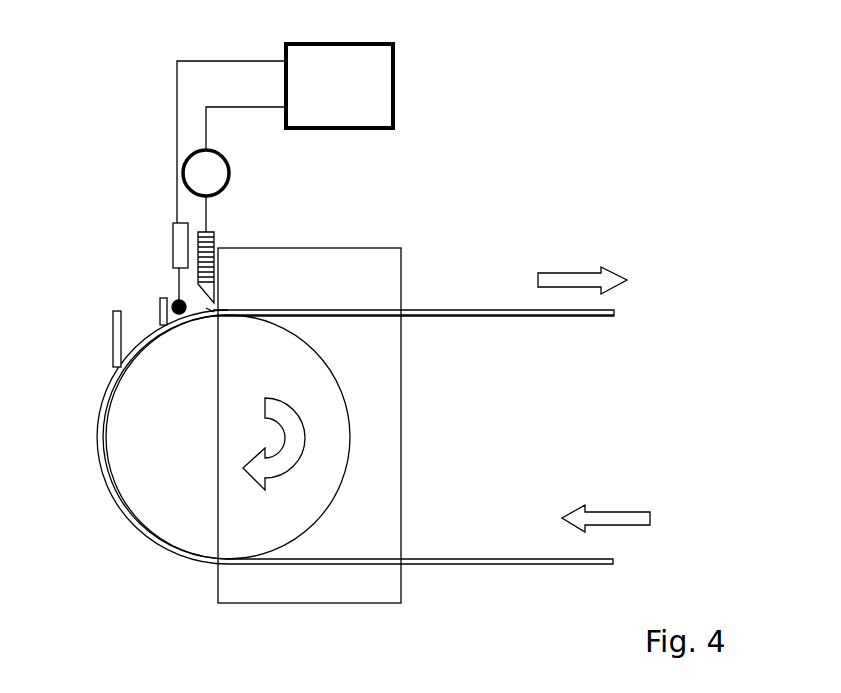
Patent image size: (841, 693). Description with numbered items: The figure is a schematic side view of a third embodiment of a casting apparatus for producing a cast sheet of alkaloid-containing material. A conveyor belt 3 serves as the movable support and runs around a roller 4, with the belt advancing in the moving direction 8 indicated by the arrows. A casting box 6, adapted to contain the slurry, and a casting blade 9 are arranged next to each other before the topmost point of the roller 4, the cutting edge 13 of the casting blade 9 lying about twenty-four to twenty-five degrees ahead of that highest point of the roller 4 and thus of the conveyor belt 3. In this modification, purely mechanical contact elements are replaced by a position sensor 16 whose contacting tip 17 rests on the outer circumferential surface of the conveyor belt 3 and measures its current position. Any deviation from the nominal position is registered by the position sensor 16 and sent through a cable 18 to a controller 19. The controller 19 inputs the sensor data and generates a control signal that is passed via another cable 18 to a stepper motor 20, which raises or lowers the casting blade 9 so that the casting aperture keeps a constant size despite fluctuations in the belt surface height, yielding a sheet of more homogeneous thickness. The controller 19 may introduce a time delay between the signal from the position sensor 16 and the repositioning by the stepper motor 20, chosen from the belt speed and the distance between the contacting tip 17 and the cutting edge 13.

The conveyor belt 3 is at (416, 302).
The roller 4 is at (147, 490).
The casting box 6 is at (110, 322).
The moving direction 8 is at (583, 268).
The casting blade 9 is at (216, 268).
The cutting edge 13 is at (210, 310).
The position sensor 16 is at (178, 243).
The contacting tip 17 is at (175, 302).
The cable 18 is at (167, 107).
The controller 19 is at (368, 86).
The stepper motor 20 is at (233, 189).